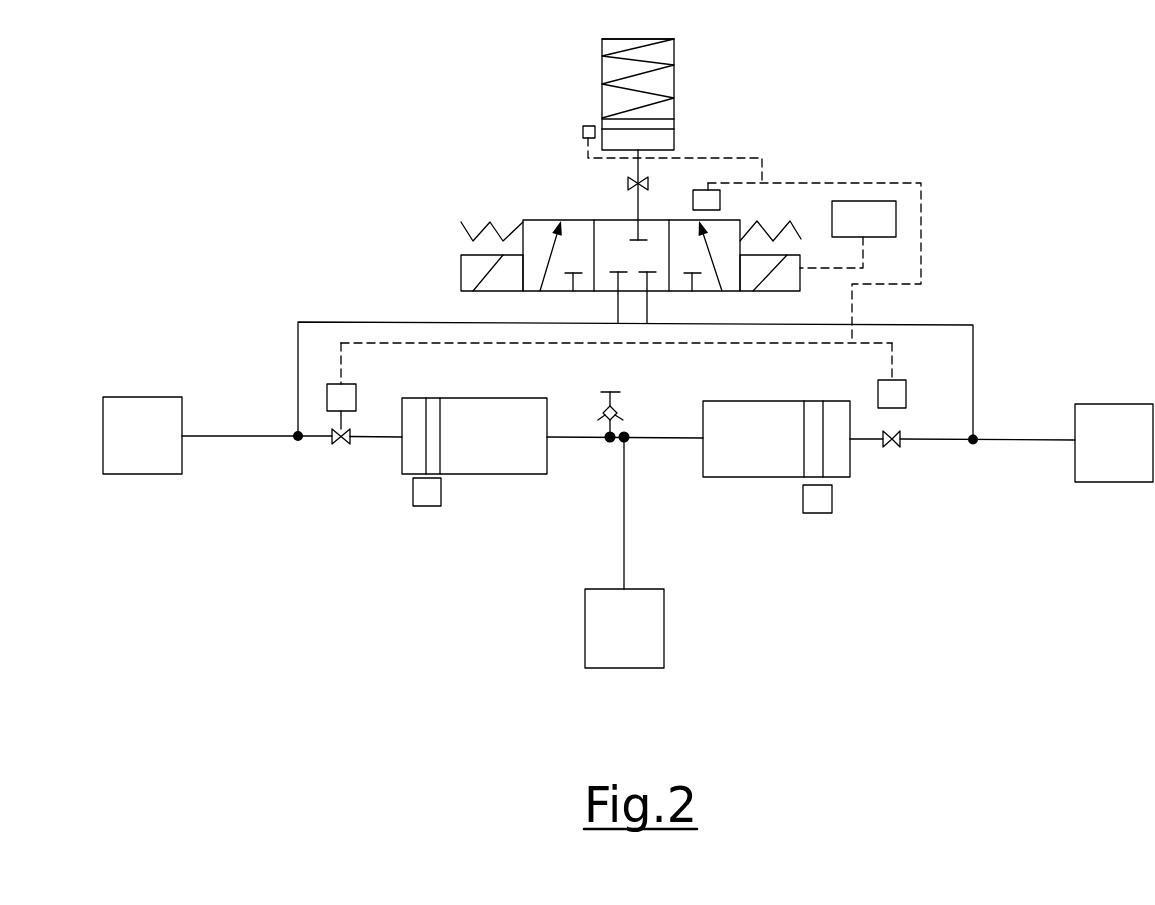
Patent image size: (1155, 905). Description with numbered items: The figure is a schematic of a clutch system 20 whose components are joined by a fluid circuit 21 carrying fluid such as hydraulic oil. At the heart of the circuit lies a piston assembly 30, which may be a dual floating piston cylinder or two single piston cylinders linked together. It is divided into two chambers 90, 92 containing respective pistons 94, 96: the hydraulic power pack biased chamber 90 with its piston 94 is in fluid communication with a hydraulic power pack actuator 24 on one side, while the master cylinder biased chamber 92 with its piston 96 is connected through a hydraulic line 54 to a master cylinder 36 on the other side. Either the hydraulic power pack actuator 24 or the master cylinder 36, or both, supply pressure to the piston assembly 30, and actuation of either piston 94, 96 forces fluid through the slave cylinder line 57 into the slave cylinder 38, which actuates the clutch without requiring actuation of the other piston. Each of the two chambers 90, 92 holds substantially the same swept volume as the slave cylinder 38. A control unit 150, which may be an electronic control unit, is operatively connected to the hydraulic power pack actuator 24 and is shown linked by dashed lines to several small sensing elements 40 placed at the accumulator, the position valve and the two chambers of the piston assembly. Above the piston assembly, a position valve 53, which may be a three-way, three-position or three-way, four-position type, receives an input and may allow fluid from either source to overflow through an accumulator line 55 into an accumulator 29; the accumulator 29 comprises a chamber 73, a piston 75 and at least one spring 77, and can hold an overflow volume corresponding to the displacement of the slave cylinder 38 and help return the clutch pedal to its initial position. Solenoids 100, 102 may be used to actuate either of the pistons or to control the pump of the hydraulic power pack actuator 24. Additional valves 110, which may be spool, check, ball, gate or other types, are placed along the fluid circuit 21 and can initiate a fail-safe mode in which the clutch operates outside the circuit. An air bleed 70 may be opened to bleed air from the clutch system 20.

The clutch system 20 is at (922, 318).
The fluid circuit 21 is at (338, 320).
The hydraulic power pack actuator 24 is at (142, 435).
The accumulator 29 is at (619, 90).
The piston assembly 30 is at (474, 436).
The master cylinder 36 is at (1114, 443).
The slave cylinder 38 is at (624, 628).
The sensor 40 is at (583, 132).
The position valve 53 is at (585, 226).
The hydraulic line 54 is at (370, 438).
The accumulator line 55 is at (650, 179).
The slave cylinder line 57 is at (625, 523).
The air bleed 70 is at (617, 412).
The chamber 73 is at (611, 73).
The piston 75 is at (663, 124).
The spring 77 is at (657, 56).
The hydraulic power pack biased chamber 90 is at (515, 467).
The master cylinder biased chamber 92 is at (793, 444).
The hydraulic power pack biased piston 94 is at (430, 410).
The master cylinder biased piston 96 is at (817, 415).
The solenoid 100 is at (362, 375).
The solenoid 102 is at (907, 395).
The valve 110 is at (340, 446).
The control unit 150 is at (618, 292).